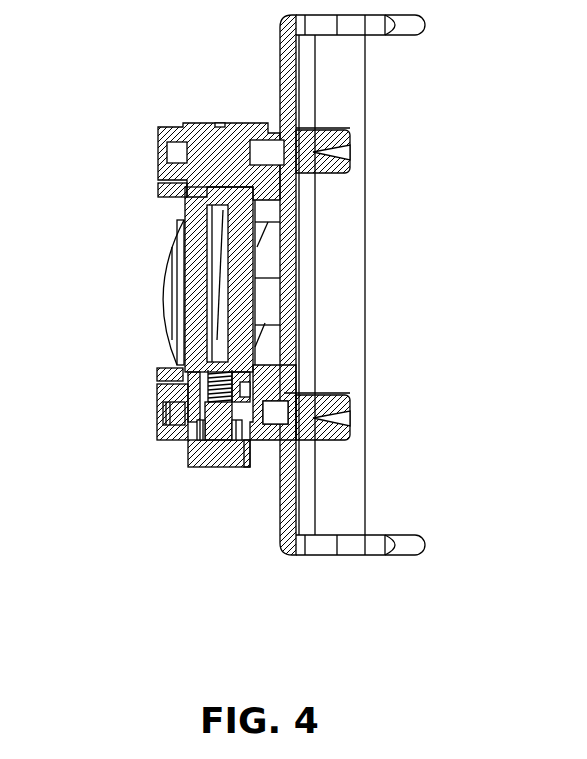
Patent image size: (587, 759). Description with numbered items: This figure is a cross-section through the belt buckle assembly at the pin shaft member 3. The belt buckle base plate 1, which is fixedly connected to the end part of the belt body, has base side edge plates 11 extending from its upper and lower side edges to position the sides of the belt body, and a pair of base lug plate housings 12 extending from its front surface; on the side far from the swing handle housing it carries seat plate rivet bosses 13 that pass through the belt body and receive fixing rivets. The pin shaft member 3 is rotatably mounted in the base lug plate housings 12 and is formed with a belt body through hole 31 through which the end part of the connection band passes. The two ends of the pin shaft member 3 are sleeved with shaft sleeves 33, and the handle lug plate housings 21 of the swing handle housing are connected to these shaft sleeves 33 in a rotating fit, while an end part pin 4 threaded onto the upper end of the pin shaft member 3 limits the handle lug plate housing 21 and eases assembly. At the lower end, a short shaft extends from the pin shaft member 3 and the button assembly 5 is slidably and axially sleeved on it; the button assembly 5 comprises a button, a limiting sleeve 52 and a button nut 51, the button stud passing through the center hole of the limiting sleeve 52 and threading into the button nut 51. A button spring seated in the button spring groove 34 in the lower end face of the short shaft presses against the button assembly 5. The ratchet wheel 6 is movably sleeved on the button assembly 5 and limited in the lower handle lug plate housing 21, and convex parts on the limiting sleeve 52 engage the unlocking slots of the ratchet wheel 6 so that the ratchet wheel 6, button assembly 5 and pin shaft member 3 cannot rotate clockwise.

The belt buckle base plate 1 is at (297, 302).
The base side edge plate 11 is at (362, 27).
The base lug plate housing 12 is at (160, 370).
The seat plate rivet boss 13 is at (338, 418).
The handle lug plate housing 21 is at (158, 153).
The pin shaft member 3 is at (193, 290).
The belt body through hole 31 is at (207, 322).
The shaft sleeve 33 is at (157, 182).
The button spring groove 34 is at (367, 386).
The end part pin 4 is at (200, 133).
The button assembly 5 is at (215, 457).
The button nut 51 is at (232, 445).
The limiting sleeve 52 is at (250, 460).
The ratchet wheel 6 is at (172, 440).